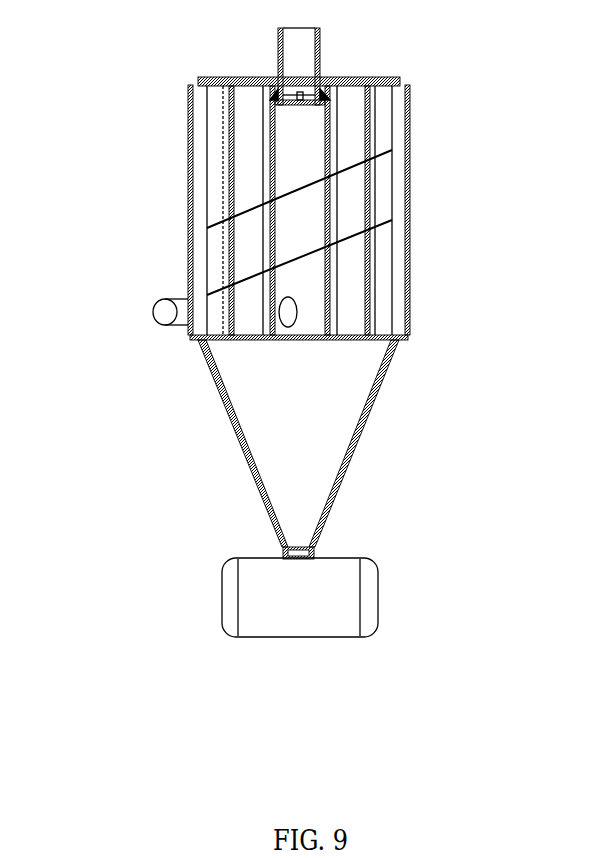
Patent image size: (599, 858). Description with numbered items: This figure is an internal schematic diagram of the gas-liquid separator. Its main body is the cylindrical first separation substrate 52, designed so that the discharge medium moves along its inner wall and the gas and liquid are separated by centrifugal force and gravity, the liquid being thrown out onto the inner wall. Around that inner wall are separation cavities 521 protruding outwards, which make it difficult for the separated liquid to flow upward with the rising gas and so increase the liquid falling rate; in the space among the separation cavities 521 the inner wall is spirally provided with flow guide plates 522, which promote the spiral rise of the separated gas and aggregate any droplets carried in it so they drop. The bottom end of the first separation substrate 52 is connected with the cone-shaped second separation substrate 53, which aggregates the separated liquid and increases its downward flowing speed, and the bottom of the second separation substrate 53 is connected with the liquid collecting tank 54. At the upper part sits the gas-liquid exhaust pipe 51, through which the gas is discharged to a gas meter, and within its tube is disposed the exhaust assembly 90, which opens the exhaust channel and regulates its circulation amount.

The exhaust assembly 90 is at (297, 93).
The gas-liquid exhaust pipe 51 is at (320, 62).
The first separation substrate 52 is at (410, 288).
The separation cavities 521 is at (228, 178).
The flow guide plates 522 is at (250, 278).
The second separation substrate 53 is at (260, 438).
The liquid collecting tank 54 is at (265, 583).